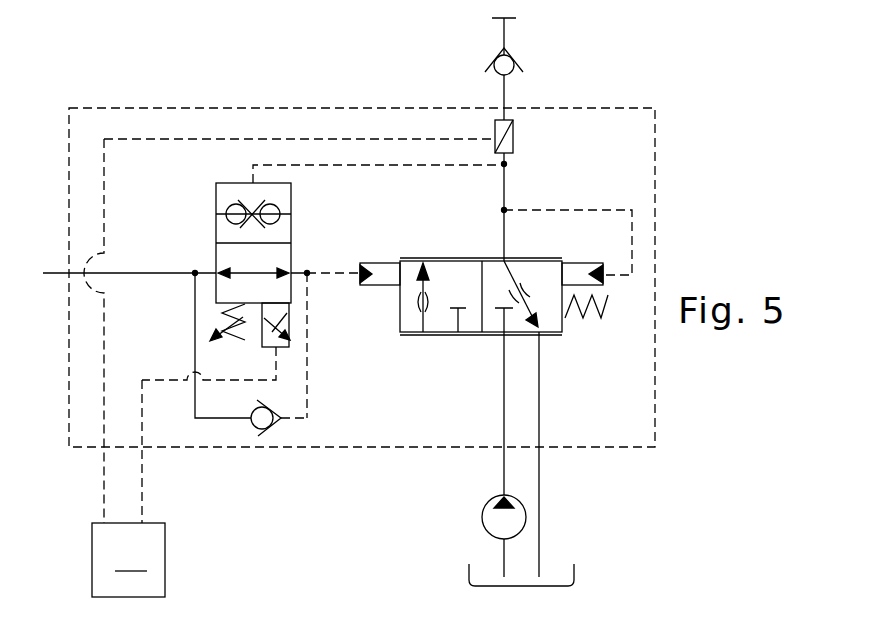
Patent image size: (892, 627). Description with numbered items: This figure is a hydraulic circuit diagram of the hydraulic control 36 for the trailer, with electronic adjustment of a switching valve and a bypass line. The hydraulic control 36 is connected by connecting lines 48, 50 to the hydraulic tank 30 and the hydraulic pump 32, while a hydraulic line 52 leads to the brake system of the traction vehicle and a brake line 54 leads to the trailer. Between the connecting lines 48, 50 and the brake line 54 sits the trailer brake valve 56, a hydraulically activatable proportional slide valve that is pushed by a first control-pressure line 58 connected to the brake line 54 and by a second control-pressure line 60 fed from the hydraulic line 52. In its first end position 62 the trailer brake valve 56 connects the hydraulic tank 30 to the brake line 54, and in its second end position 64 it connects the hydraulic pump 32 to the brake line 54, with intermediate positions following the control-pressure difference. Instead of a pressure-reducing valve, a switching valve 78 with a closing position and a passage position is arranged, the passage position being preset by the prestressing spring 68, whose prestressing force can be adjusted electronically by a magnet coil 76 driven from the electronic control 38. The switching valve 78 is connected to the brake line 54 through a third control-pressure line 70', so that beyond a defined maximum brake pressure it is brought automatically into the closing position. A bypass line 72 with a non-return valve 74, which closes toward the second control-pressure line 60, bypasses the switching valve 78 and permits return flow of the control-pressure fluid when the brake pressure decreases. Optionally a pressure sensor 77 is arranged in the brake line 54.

The hydraulic tank 30 is at (574, 586).
The hydraulic pump 32 is at (492, 527).
The hydraulic control 36 is at (325, 450).
The electronic control 38 is at (289, 368).
The connecting line 48 is at (539, 488).
The connecting line 50 is at (503, 482).
The hydraulic line 52 is at (155, 276).
The brake line 54 is at (504, 97).
The trailer brake valve 56 is at (475, 332).
The first control-pressure line 58 is at (607, 210).
The second control-pressure line 60 is at (339, 275).
The first end position 62 is at (548, 322).
The second end position 64 is at (452, 280).
The prestressing spring 68 is at (225, 320).
The third control-pressure line 70' is at (380, 192).
The bypass line 72 is at (196, 345).
The non-return valve 74 is at (258, 424).
The magnet coil 76 is at (288, 327).
The pressure sensor 77 is at (513, 130).
The switching valve 78 is at (220, 236).